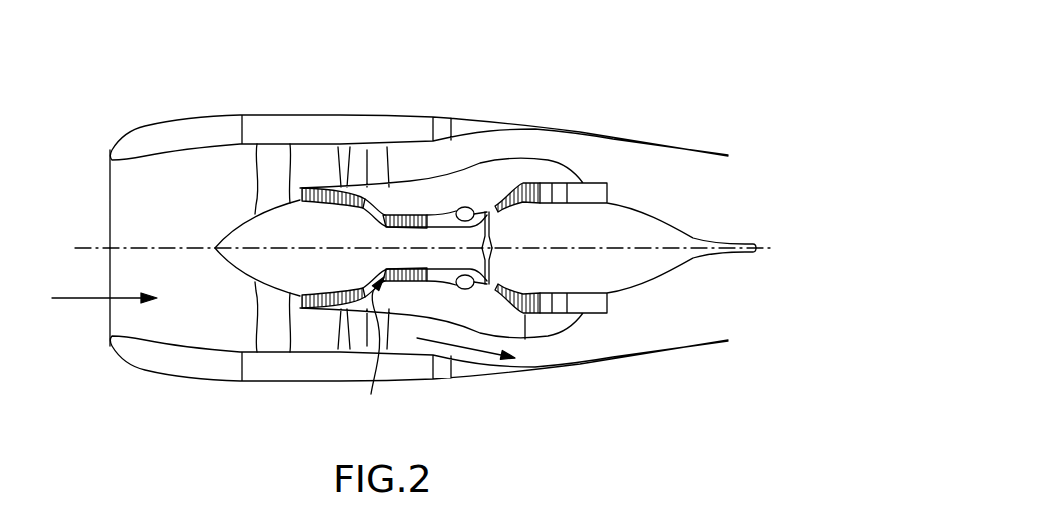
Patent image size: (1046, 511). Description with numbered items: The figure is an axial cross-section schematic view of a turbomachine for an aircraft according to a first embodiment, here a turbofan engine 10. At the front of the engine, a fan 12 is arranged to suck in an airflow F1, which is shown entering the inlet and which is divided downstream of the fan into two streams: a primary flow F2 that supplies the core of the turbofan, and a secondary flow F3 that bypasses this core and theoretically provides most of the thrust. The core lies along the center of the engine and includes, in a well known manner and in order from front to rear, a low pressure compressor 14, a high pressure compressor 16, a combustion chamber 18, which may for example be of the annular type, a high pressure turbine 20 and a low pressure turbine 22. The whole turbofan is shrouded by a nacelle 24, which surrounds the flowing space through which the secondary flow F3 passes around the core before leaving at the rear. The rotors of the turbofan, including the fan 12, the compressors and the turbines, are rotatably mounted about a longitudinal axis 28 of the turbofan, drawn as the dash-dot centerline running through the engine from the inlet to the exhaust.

The turbofan engine 10 is at (238, 78).
The fan 12 is at (273, 315).
The low pressure compressor 14 is at (317, 185).
The high pressure compressor 16 is at (412, 202).
The combustion chamber 18 is at (460, 192).
The high pressure turbine 20 is at (487, 193).
The low pressure turbine 22 is at (533, 168).
The nacelle 24 is at (358, 127).
The longitudinal axis 28 is at (90, 247).
The airflow F1 is at (84, 300).
The primary flow F2 is at (375, 349).
The secondary flow F3 is at (470, 350).